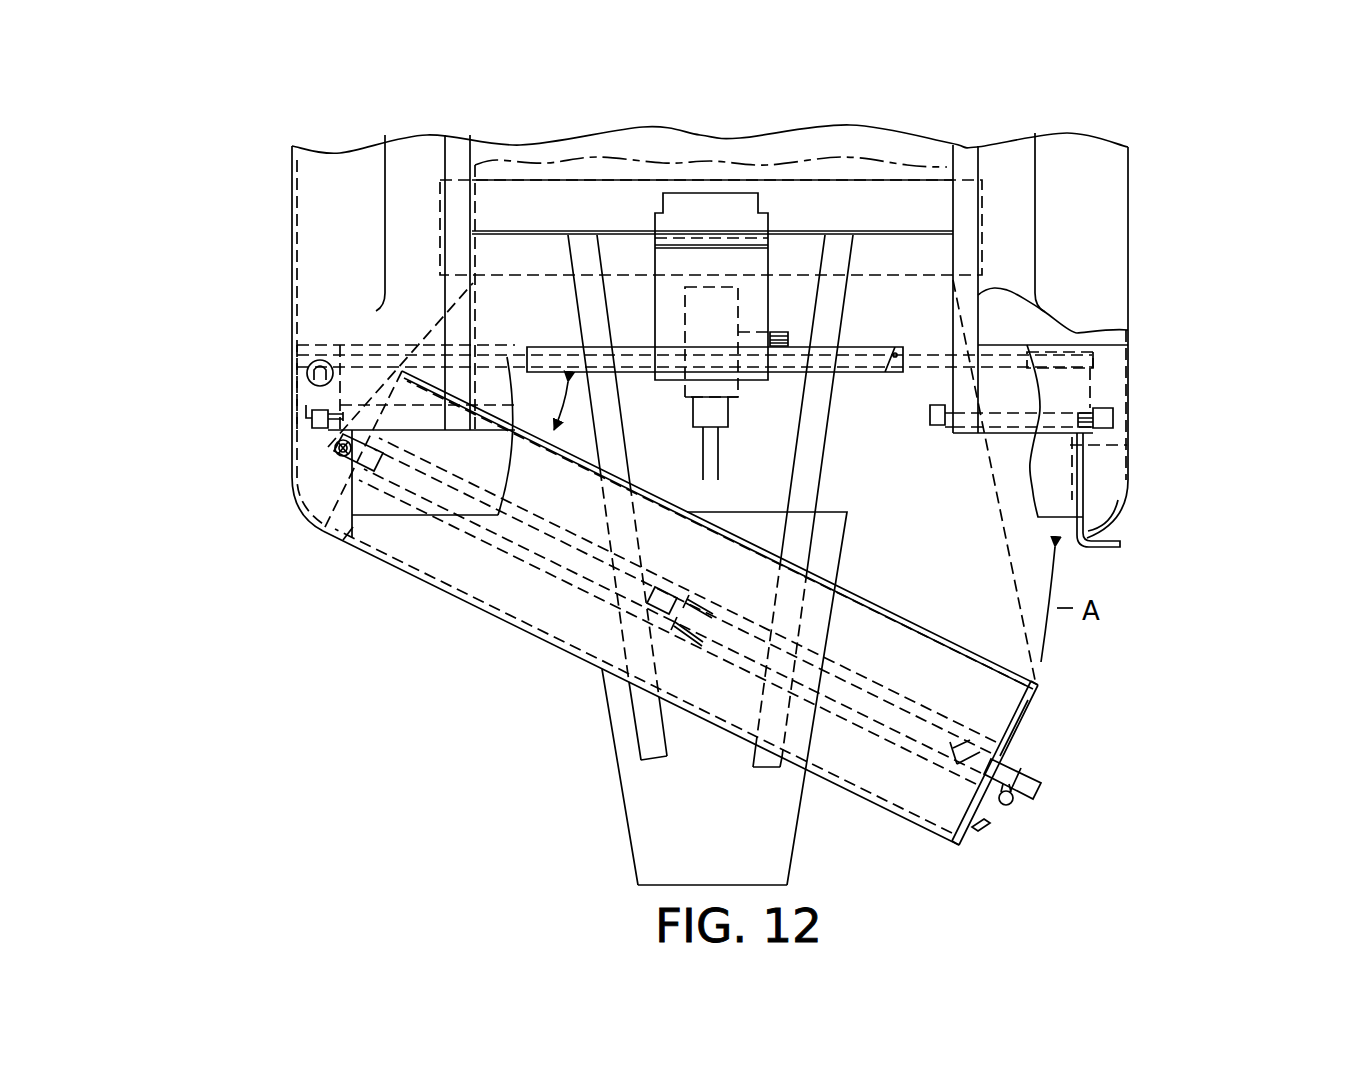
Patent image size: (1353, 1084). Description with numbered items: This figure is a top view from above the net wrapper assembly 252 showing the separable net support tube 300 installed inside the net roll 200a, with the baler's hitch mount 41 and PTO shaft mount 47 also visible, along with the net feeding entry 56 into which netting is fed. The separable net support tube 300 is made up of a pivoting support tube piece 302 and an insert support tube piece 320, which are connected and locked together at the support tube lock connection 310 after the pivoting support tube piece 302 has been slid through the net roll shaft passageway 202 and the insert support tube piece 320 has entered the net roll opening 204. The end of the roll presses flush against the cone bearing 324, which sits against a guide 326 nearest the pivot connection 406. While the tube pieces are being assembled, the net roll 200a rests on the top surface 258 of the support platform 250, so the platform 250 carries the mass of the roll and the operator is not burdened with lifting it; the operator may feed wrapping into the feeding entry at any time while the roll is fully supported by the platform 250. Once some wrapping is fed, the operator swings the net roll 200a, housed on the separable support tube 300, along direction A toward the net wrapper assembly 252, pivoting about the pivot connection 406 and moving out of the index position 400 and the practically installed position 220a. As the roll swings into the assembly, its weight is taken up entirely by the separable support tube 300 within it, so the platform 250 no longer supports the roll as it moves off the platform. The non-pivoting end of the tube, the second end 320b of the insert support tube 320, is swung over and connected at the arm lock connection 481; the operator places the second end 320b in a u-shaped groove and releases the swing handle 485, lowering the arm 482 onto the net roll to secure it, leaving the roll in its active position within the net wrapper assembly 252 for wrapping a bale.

The net wrapper assembly 252 is at (210, 183).
The PTO shaft mount 47 is at (713, 318).
The net feeding entry 56 is at (877, 303).
The index position 400 is at (563, 407).
The pivot connection 406 is at (330, 446).
The guide 326 is at (345, 437).
The cone bearing 324 is at (372, 512).
The arm lock connection 481 is at (1112, 418).
The arm 482 is at (1077, 473).
The swing handle 485 is at (1103, 543).
The hitch mount 41 is at (813, 437).
The separable net support tube 300 is at (757, 652).
The net roll 200a is at (423, 552).
The pivoting support tube piece 302 is at (532, 538).
The net roll shaft passageway 202 is at (570, 647).
The support tube lock connection 310 is at (667, 613).
The support platform 250 is at (625, 817).
The top surface 258 is at (695, 807).
The insert support tube piece 320 is at (927, 735).
The second end of insert support tube piece 320b is at (1040, 786).
The net roll opening 204 is at (995, 742).
The practically installed position 220a is at (941, 856).